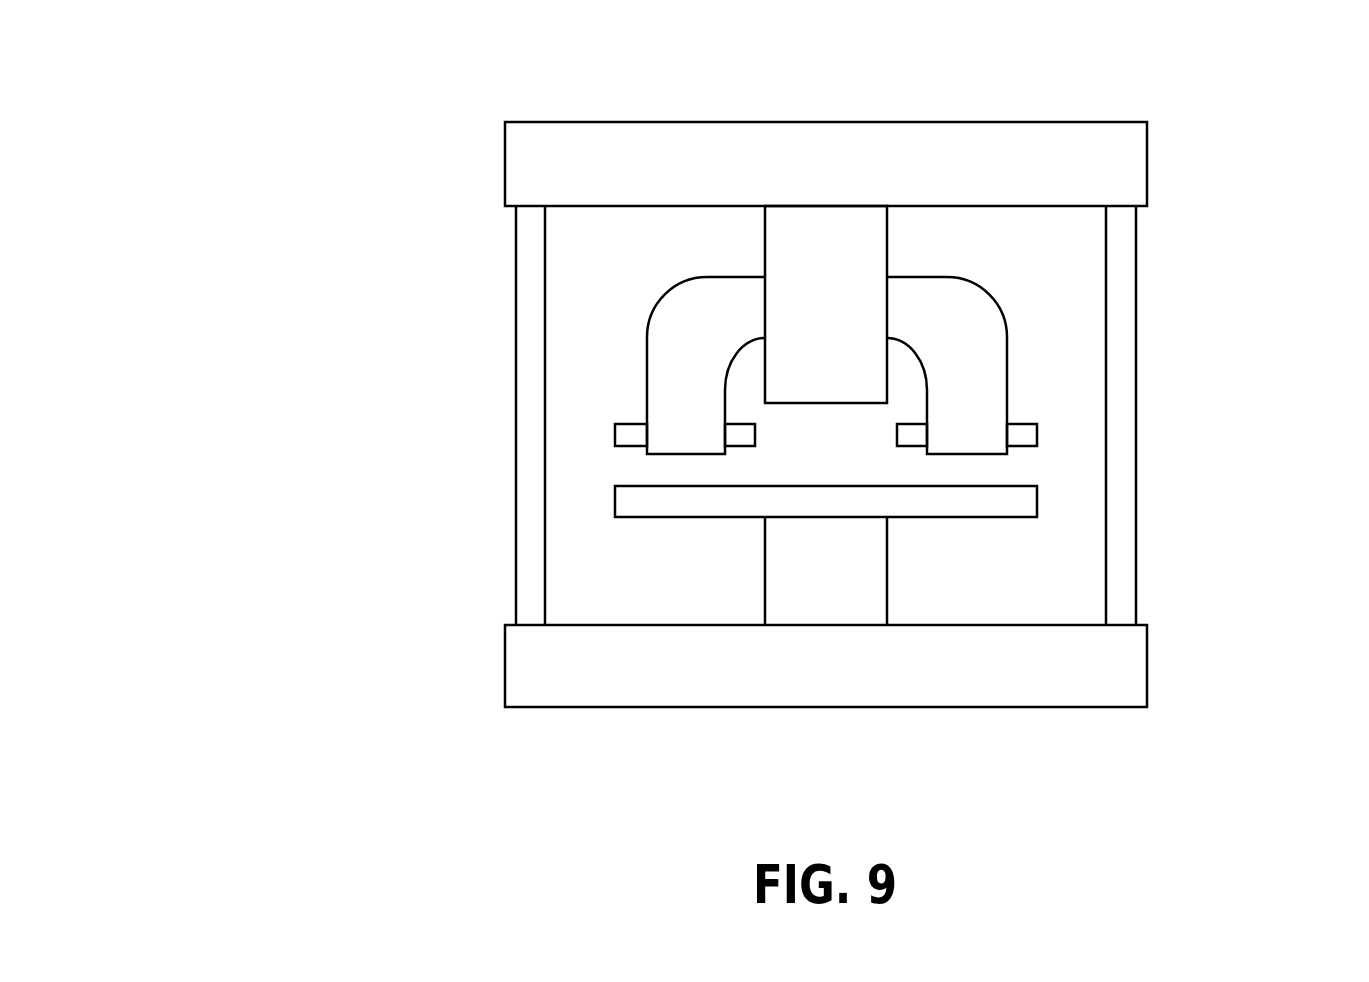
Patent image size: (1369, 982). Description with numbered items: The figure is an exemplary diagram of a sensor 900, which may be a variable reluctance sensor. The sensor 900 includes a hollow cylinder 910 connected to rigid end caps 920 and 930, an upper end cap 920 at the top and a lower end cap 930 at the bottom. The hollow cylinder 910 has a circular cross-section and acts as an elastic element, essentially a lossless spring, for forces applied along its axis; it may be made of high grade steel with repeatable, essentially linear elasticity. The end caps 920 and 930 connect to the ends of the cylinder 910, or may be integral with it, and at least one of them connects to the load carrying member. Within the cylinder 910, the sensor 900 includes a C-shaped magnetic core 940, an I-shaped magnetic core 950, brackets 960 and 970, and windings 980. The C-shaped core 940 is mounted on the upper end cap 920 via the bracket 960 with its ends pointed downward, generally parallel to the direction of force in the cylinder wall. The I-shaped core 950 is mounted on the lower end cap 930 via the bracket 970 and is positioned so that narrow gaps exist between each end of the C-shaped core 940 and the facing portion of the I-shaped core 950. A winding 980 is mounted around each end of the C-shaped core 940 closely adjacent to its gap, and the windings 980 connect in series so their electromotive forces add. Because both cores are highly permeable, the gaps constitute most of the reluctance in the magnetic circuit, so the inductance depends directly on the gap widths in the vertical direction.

The sensor 900 is at (262, 61).
The hollow cylinder 910 is at (516, 242).
The upper end cap 920 is at (1148, 157).
The lower end cap 930 is at (1147, 660).
The C-shaped magnetic core 940 is at (1007, 345).
The I-shaped magnetic core 950 is at (615, 498).
The bracket 960 is at (826, 304).
The bracket 970 is at (826, 571).
The windings 980 is at (1237, 444).